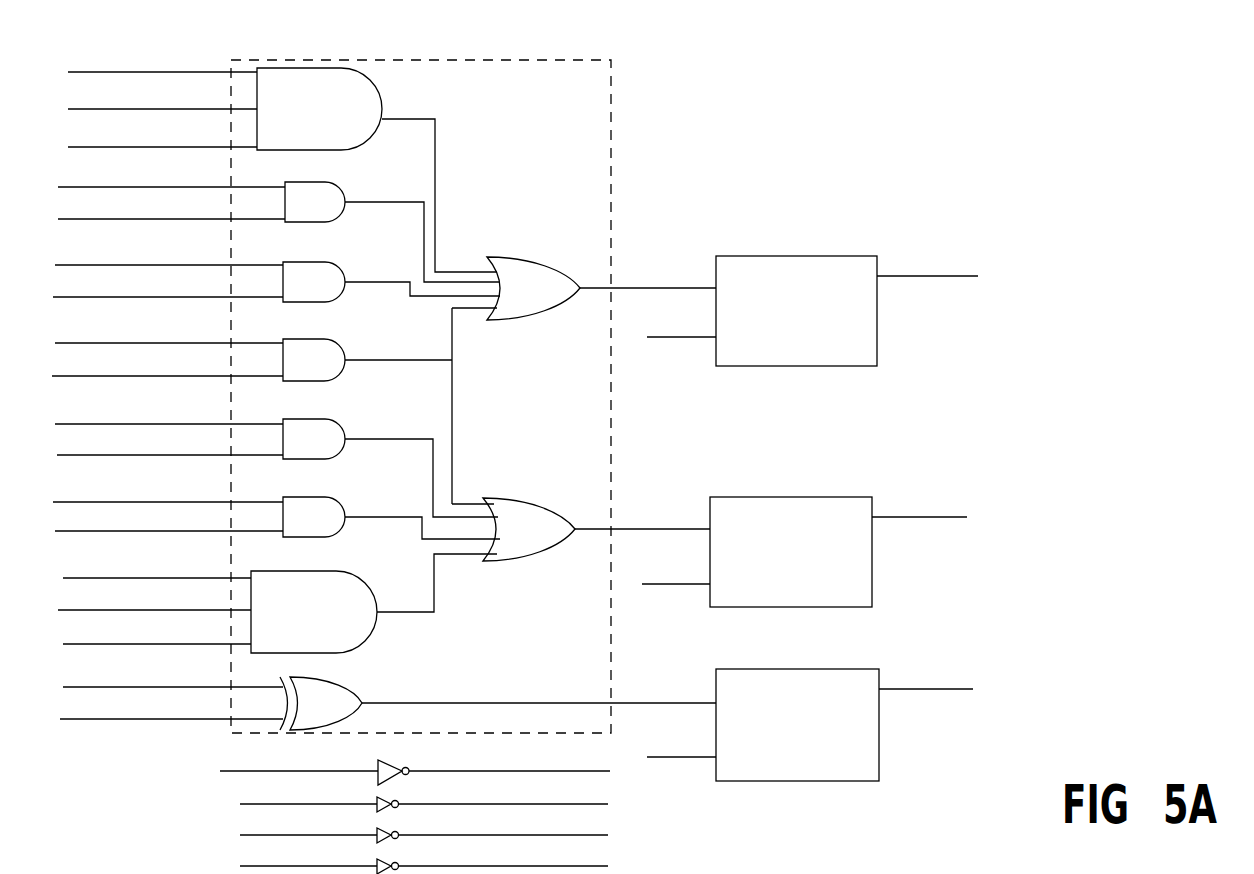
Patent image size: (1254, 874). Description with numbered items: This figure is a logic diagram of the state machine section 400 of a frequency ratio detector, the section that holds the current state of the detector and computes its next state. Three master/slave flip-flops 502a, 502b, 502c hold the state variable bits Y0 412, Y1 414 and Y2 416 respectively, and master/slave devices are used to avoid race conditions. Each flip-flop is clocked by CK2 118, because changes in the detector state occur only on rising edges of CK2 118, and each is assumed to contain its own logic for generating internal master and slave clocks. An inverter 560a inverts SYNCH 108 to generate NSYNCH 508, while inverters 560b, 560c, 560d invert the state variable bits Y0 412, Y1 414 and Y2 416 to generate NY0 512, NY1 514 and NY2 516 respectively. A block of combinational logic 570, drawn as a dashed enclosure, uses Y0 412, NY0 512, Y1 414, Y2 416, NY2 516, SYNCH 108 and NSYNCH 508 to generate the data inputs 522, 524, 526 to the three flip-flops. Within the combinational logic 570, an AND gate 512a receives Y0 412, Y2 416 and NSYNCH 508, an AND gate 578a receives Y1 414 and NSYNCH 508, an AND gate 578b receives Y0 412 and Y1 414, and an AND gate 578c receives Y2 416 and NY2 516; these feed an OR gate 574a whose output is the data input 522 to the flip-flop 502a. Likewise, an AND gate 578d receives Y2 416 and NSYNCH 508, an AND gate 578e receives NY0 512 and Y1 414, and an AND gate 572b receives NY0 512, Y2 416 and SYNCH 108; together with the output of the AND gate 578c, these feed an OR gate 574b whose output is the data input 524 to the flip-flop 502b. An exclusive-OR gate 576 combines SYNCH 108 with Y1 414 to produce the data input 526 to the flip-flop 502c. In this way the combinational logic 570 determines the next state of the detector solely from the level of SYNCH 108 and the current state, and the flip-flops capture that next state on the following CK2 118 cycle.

The state machine section 400 is at (925, 58).
The combinational logic 570 is at (451, 61).
The AND gate 512a is at (337, 118).
The AND gate 578a is at (335, 215).
The AND gate 578b is at (333, 291).
The AND gate 578c is at (333, 368).
The AND gate 578d is at (333, 445).
The AND gate 578e is at (331, 523).
The AND gate 572b is at (332, 622).
The exclusive-OR gate 576 is at (345, 710).
The OR gate 574a is at (558, 296).
The OR gate 574b is at (553, 535).
The master/slave flip-flop 502a is at (817, 256).
The master/slave flip-flop 502b is at (813, 497).
The master/slave flip-flop 502c is at (797, 668).
The data input 522 is at (648, 274).
The data input 524 is at (642, 514).
The data input 526 is at (656, 681).
The inverter 560a is at (381, 766).
The inverter 560b is at (386, 806).
The inverter 560c is at (386, 837).
The inverter 560d is at (386, 869).
The state variable bit Y0 412 is at (516, 424).
The state variable bit Y1 414 is at (512, 498).
The state variable bit Y2 416 is at (515, 475).
The NSYNCH 508 is at (334, 447).
The SYNCH 108 is at (217, 602).
The NY0 512 is at (330, 641).
The NY1 514 is at (503, 821).
The NY2 516 is at (330, 609).
The CK2 118 is at (669, 531).